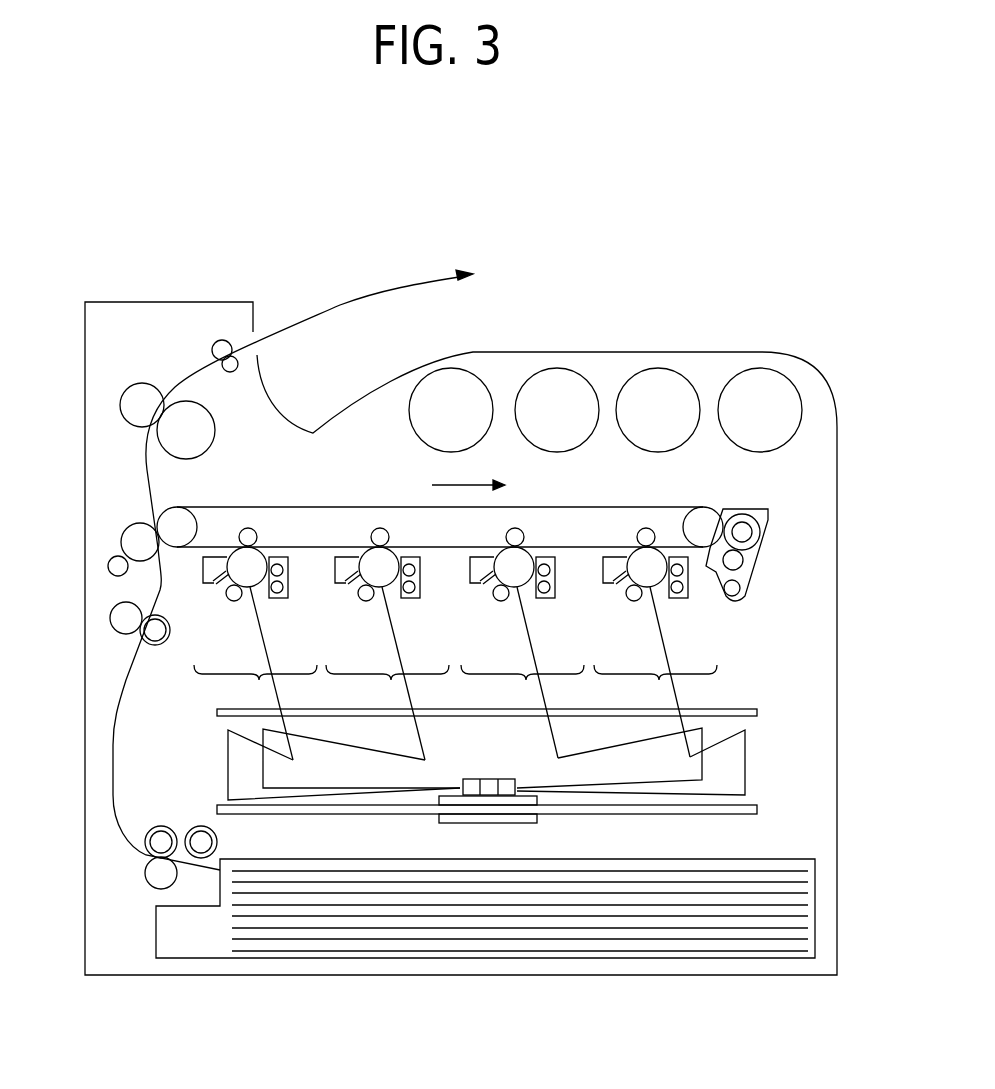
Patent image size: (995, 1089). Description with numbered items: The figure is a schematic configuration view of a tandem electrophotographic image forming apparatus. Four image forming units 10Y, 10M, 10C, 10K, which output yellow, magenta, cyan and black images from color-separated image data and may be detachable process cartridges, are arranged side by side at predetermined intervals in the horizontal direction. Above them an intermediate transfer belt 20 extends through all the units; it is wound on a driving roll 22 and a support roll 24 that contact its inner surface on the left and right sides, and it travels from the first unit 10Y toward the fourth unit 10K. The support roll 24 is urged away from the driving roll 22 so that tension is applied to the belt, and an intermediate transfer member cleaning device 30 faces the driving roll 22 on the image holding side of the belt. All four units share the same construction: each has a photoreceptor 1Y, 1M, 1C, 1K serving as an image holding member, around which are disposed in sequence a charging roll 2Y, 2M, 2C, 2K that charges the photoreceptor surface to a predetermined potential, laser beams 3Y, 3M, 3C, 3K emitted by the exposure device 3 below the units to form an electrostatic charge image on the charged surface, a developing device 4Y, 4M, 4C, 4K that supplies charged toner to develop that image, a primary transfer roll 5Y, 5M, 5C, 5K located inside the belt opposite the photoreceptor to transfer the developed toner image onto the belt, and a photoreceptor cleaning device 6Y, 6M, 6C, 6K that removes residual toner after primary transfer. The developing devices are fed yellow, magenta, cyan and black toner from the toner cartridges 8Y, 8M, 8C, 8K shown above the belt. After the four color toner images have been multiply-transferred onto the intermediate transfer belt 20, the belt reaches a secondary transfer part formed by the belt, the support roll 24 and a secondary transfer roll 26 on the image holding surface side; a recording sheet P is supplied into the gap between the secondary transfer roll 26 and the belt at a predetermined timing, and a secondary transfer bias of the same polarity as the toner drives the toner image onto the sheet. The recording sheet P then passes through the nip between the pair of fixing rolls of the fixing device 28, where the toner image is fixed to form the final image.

The photoreceptor 1K is at (260, 590).
The photoreceptor 1C is at (392, 590).
The photoreceptor 1M is at (527, 590).
The photoreceptor 1Y is at (660, 590).
The charging roll 2K is at (234, 601).
The charging roll 2C is at (366, 601).
The charging roll 2M is at (501, 601).
The charging roll 2Y is at (634, 601).
The exposure device 3 is at (548, 819).
The laser beams 3K is at (228, 765).
The laser beams 3C is at (322, 741).
The laser beams 3M is at (607, 747).
The laser beams 3Y is at (748, 760).
The developing device 4K is at (285, 598).
The developing device 4C is at (417, 598).
The developing device 4M is at (552, 598).
The developing device 4Y is at (685, 598).
The primary transfer roll 5K is at (255, 532).
The primary transfer roll 5C is at (387, 532).
The primary transfer roll 5M is at (522, 532).
The primary transfer roll 5Y is at (653, 530).
The photoreceptor cleaning device 6K is at (205, 572).
The photoreceptor cleaning device 6C is at (337, 572).
The photoreceptor cleaning device 6M is at (472, 572).
The photoreceptor cleaning device 6Y is at (605, 572).
The toner cartridge 8K is at (449, 390).
The toner cartridge 8C is at (555, 390).
The toner cartridge 8M is at (656, 390).
The toner cartridge 8Y is at (758, 390).
The image forming unit 10K is at (255, 686).
The image forming unit 10C is at (387, 686).
The image forming unit 10M is at (522, 686).
The image forming unit 10Y is at (655, 686).
The intermediate transfer belt 20 is at (598, 506).
The driving roll 22 is at (703, 508).
The support roll 24 is at (178, 515).
The secondary transfer roll 26 is at (113, 544).
The fixing device 28 is at (157, 450).
The intermediate transfer member cleaning device 30 is at (766, 510).
The recording sheet P is at (793, 910).